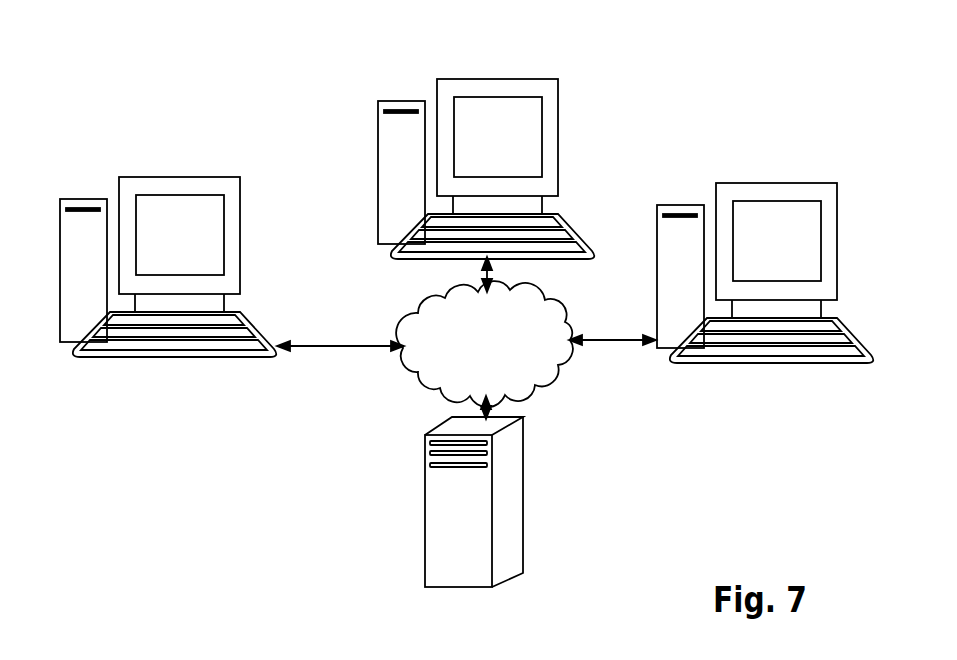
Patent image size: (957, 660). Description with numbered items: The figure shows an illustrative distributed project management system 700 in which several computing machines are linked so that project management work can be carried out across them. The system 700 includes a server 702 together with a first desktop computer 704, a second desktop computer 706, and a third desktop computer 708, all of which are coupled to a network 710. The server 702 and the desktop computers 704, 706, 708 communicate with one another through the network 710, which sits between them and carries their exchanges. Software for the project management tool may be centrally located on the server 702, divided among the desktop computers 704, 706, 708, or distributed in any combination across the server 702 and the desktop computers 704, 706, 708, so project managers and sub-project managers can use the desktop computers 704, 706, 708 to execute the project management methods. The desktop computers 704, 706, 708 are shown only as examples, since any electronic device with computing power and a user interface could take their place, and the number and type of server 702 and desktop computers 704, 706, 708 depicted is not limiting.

The distributed project management system 700 is at (456, 333).
The server 702 is at (424, 533).
The first desktop computer 704 is at (113, 358).
The second desktop computer 706 is at (403, 267).
The third desktop computer 708 is at (700, 365).
The network 710 is at (429, 380).